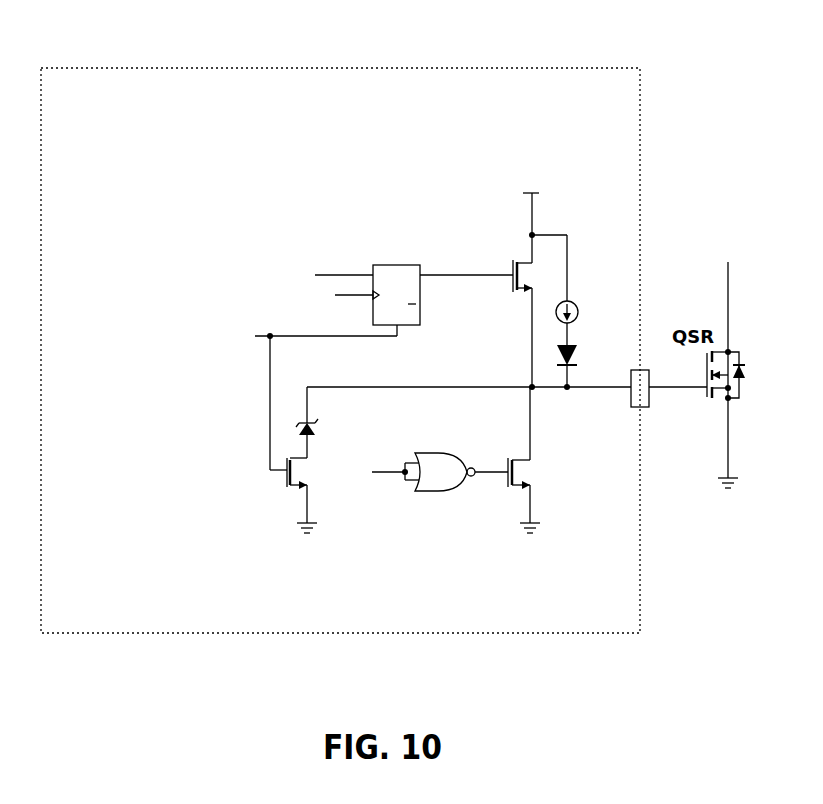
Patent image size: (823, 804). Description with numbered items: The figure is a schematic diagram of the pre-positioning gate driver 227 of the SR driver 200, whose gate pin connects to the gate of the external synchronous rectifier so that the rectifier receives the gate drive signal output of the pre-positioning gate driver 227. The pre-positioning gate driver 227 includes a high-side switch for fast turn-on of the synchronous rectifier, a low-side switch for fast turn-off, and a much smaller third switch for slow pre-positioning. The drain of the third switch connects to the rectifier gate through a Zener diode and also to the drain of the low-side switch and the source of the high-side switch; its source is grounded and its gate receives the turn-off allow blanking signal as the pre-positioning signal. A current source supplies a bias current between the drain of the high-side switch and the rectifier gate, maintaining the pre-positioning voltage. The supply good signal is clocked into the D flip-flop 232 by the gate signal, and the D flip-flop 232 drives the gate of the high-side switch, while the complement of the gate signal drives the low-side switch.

The SR driver 200 is at (473, 68).
The pre-positioning gate driver 227 is at (386, 204).
The D flip-flop 232 is at (383, 265).